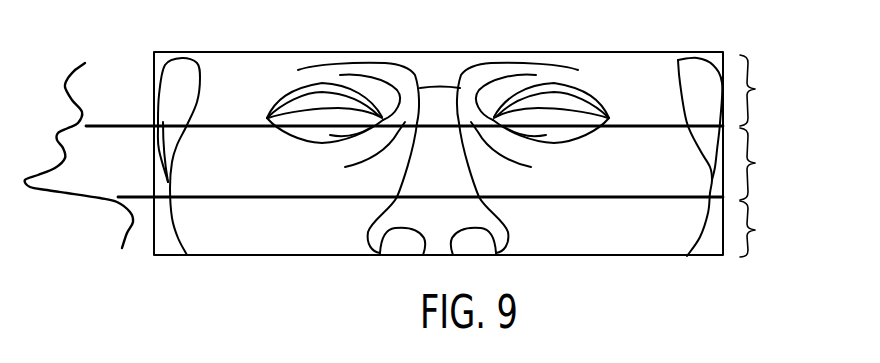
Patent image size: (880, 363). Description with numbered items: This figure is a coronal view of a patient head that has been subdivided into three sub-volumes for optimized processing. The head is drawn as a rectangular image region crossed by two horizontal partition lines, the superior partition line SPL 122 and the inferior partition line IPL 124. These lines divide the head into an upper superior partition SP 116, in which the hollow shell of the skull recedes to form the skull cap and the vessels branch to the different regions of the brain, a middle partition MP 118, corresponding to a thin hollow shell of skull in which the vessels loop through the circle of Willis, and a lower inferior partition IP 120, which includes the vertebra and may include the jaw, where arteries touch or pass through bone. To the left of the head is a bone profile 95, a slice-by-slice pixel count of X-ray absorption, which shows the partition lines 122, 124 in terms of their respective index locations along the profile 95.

The bone profile 95 is at (75, 70).
The superior partition line (SPL) 122 is at (732, 118).
The inferior partition line (IPL) 124 is at (735, 202).
The superior partition (SP) 116 is at (755, 89).
The middle partition (MP) 118 is at (755, 163).
The inferior partition (IP) 120 is at (755, 230).